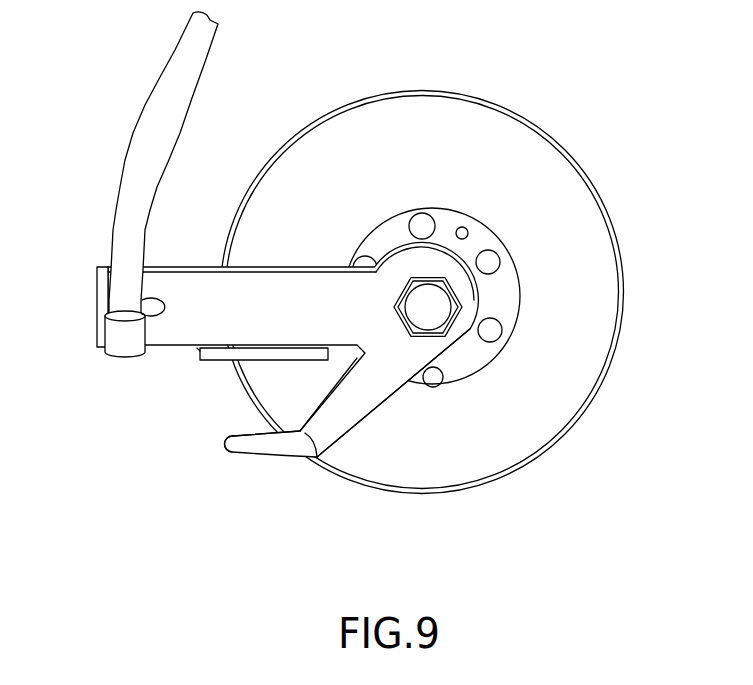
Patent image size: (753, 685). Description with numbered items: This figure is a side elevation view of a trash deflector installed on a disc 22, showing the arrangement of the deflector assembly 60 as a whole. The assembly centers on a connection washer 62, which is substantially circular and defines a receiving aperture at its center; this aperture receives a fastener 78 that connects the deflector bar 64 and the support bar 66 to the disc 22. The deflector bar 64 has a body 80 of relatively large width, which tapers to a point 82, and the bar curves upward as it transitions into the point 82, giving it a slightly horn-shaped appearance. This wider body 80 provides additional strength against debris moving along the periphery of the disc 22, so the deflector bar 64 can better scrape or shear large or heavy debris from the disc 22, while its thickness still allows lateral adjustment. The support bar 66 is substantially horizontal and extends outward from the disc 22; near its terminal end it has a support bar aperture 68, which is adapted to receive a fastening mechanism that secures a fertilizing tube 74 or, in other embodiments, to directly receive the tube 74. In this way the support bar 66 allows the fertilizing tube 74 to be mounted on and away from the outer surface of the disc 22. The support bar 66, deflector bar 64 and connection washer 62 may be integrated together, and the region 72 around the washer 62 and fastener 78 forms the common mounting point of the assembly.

The disc 22 is at (522, 455).
The caster assembly direction arrow 60 is at (202, 240).
The connection washer 62 is at (457, 345).
The deflector bar 64 is at (250, 470).
The support bar 66 is at (103, 293).
The support bar aperture 68 is at (163, 320).
The bearing end of arm 72 is at (383, 288).
The fertilizing tube 74 is at (157, 87).
The fastener 78 is at (440, 305).
The body 80 is at (358, 420).
The point 82 is at (232, 455).